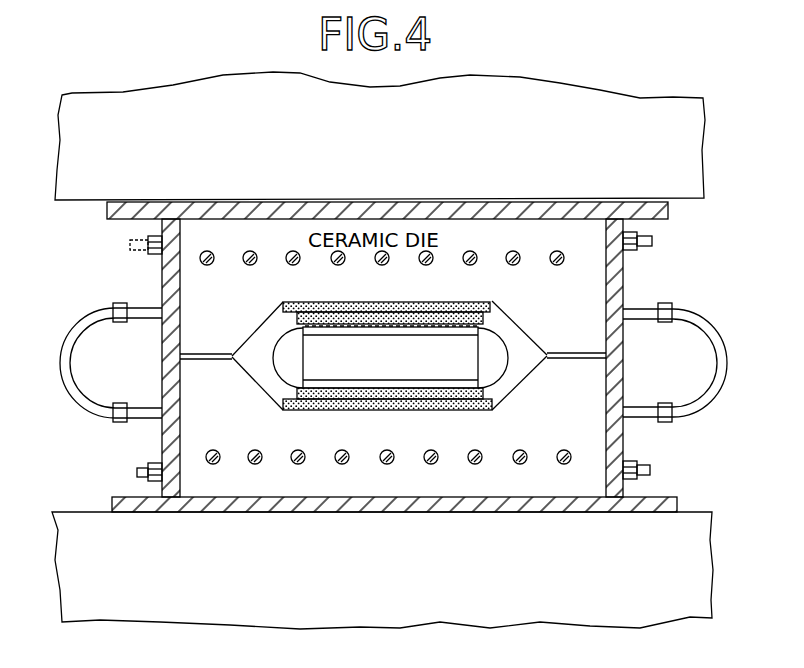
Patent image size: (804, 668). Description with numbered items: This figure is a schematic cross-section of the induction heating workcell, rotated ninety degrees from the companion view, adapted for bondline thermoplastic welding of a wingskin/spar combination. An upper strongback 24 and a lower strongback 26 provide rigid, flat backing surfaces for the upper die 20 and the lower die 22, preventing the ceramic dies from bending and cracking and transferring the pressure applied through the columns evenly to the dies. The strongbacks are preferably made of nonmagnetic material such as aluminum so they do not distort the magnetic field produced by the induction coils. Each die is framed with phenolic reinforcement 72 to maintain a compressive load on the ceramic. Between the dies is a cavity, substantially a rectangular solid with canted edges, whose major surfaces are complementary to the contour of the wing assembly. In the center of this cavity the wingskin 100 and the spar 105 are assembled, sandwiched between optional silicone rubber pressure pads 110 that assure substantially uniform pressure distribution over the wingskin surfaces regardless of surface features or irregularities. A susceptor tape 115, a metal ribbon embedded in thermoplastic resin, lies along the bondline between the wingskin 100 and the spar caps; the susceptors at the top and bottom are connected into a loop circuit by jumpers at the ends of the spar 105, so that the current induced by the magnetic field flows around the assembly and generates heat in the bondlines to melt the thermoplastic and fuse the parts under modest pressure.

The upper strongback 24 is at (704, 157).
The lower strongback 26 is at (712, 560).
The phenolic reinforcement 72 is at (160, 262).
The upper die 20 is at (233, 305).
The lower die 22 is at (553, 483).
The silicone rubber pressure pads 110 is at (491, 300).
The susceptor tape 115 is at (297, 391).
The wingskin 100 is at (508, 366).
The spar 105 is at (312, 356).